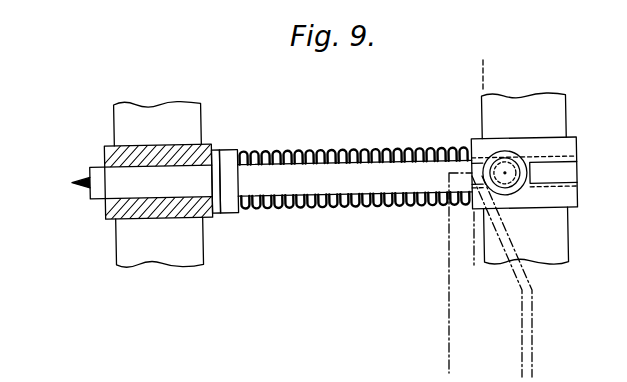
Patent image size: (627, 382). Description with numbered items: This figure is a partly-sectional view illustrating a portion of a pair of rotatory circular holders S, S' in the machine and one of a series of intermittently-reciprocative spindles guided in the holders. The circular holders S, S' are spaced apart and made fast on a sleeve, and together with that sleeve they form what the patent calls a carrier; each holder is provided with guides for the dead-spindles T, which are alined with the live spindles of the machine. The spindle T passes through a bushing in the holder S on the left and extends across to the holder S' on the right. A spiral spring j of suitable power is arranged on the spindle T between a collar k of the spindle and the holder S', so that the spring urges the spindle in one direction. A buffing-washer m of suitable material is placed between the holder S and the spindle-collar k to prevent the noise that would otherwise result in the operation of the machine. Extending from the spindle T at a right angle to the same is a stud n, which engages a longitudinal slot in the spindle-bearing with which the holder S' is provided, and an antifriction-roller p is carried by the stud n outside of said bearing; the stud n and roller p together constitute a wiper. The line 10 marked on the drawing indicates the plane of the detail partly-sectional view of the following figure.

The circular holder S is at (172, 184).
The circular holder S' is at (524, 178).
The dead-spindle T is at (320, 170).
The spiral spring j is at (380, 150).
The buffing-washer m is at (215, 214).
The collar k is at (233, 213).
The antifriction-roller p is at (501, 158).
The stud n is at (508, 171).
The section line 10- 10 is at (462, 72).